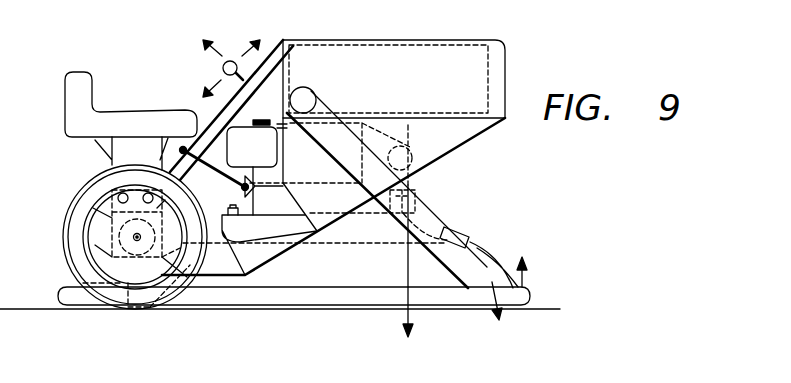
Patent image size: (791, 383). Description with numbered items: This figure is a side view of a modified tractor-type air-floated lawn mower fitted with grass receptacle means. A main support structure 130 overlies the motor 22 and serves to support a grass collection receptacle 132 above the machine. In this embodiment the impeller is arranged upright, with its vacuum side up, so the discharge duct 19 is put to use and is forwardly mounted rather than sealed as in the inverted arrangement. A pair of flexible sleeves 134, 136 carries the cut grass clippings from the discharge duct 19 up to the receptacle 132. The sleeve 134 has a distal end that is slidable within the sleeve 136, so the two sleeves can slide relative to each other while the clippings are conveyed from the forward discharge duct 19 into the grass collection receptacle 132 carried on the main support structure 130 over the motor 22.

The motor 22 is at (280, 125).
The grass collection receptacle 132 is at (490, 68).
The main support structure 130 is at (479, 134).
The flexible sleeve 136 is at (397, 150).
The flexible sleeve 134 is at (440, 212).
The discharge duct 19 is at (494, 262).